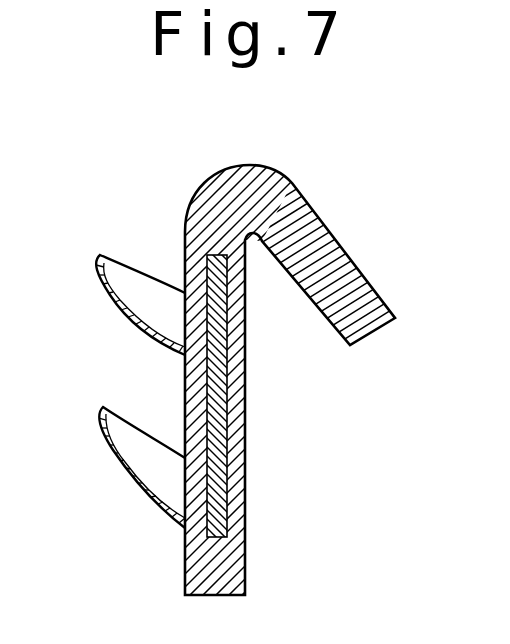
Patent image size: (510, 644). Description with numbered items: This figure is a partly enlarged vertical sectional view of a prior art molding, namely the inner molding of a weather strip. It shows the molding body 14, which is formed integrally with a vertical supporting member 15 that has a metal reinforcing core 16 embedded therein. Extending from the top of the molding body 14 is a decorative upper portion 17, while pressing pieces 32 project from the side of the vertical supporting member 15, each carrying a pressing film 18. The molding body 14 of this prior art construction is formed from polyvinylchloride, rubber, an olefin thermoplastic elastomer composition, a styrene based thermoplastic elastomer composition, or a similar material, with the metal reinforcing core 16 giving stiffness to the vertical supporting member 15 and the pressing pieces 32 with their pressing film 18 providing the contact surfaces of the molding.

The molding body 14 is at (195, 190).
The vertical supporting member 15 is at (242, 510).
The metal reinforcing core 16 is at (224, 410).
The decorative upper portion 17 is at (330, 258).
The pressing film 18 is at (121, 311).
The pressing piece 32 is at (150, 295).